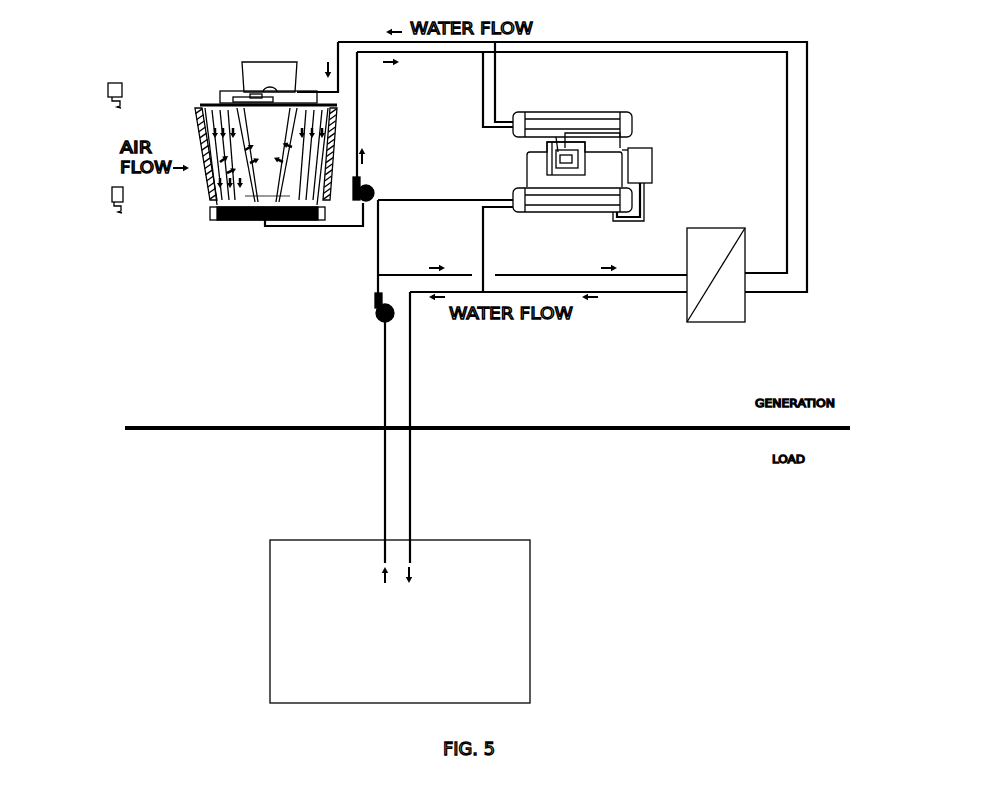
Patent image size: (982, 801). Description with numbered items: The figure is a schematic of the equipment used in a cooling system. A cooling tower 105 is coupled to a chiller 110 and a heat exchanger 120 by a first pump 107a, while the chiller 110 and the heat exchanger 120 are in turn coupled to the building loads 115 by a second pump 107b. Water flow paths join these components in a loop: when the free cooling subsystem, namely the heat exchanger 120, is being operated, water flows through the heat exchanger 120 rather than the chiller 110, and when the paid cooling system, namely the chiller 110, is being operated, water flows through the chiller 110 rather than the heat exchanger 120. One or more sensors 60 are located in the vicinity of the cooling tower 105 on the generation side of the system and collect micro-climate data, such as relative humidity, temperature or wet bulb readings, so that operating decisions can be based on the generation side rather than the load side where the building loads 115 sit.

The sensors 60 is at (108, 90).
The cooling tower 105 is at (211, 202).
The first pump 107a is at (374, 190).
The second pump 107b is at (375, 315).
The chiller 110 is at (643, 148).
The building loads 115 is at (317, 542).
The heat exchanger 120 is at (720, 232).